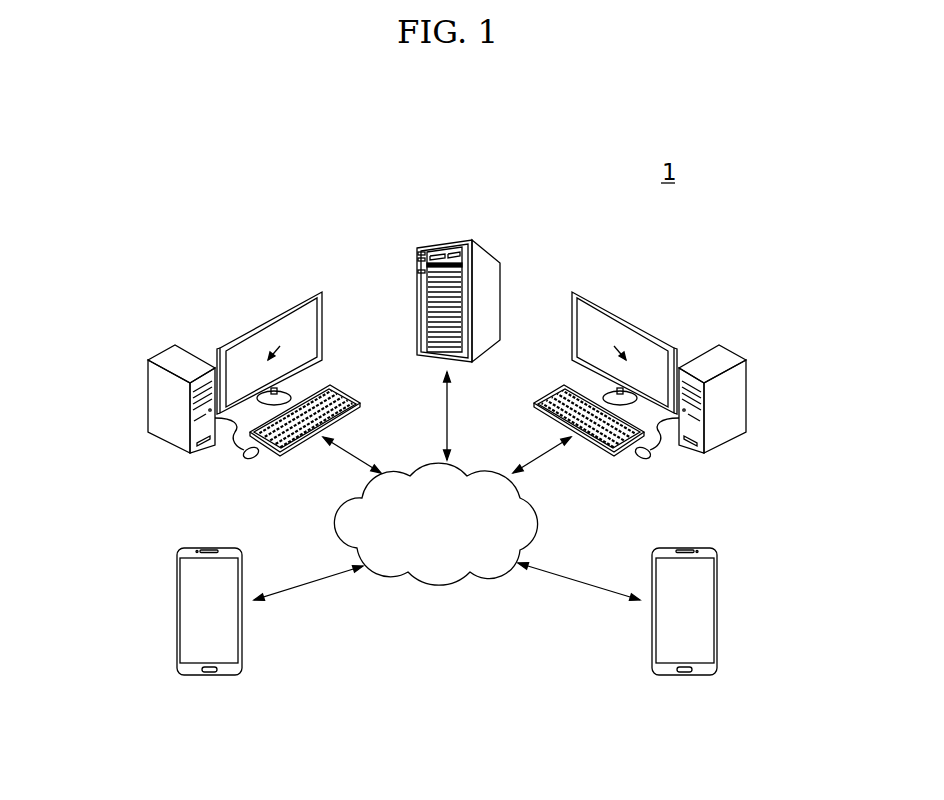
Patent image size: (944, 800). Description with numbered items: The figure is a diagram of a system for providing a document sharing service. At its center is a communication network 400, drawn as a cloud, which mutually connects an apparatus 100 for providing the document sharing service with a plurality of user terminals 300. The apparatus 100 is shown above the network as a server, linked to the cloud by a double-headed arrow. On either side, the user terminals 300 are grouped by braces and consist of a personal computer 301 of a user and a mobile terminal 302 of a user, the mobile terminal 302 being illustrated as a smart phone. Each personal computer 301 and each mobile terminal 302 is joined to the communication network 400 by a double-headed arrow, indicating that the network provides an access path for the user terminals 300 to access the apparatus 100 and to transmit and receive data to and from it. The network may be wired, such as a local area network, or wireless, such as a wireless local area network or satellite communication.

The apparatus for providing a document sharing service 100 is at (482, 253).
The user terminal 300 is at (448, 483).
The personal computer 301 is at (147, 397).
The mobile terminal 302 is at (177, 607).
The communication network 400 is at (538, 523).